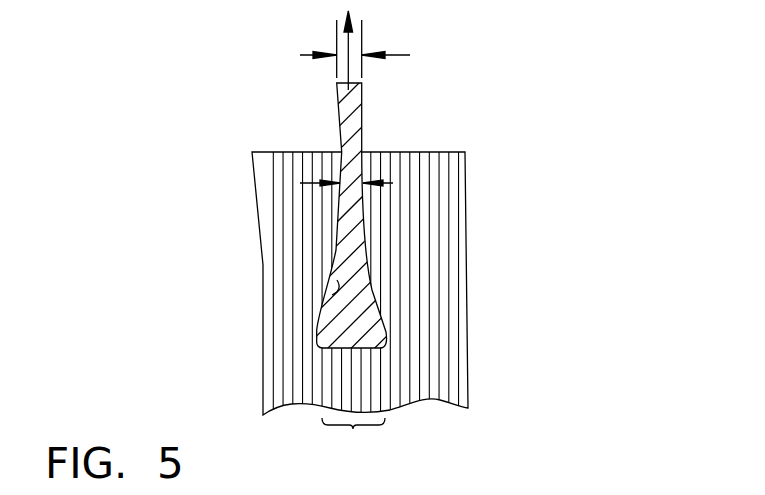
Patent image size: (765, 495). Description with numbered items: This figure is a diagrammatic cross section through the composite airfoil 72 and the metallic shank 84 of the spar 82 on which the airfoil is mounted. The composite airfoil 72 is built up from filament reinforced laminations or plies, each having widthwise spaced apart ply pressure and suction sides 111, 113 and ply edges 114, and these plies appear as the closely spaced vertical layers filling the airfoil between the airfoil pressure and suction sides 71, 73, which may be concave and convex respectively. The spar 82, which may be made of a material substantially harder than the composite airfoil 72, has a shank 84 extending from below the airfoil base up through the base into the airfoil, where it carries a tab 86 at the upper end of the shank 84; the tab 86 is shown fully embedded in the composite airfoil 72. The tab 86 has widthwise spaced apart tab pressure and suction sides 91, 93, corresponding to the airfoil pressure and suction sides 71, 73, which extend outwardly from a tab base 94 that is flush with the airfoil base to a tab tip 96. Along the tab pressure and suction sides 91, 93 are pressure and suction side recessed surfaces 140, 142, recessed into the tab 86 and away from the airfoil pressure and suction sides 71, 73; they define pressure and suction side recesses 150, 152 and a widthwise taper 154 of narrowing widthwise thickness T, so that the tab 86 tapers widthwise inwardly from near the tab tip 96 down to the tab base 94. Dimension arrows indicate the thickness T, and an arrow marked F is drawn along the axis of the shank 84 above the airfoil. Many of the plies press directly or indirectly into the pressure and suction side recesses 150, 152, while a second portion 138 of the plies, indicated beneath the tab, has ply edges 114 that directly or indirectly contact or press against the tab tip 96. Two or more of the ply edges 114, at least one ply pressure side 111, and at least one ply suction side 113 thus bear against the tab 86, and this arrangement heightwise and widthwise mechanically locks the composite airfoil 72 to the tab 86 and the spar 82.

The airfoil pressure side 71 is at (263, 341).
The composite airfoil 72 is at (468, 375).
The airfoil suction side 73 is at (467, 345).
The spar 82 is at (362, 105).
The shank 84 is at (341, 112).
The tab 86 is at (339, 202).
The tab pressure side 91 is at (337, 232).
The tab suction side 93 is at (366, 246).
The tab base 94 is at (350, 150).
The tab tip 96 is at (362, 348).
The ply pressure side 111 is at (440, 173).
The ply suction side 113 is at (440, 197).
The ply edges 114 is at (445, 152).
The second portion of the plies 138 is at (362, 434).
The pressure side recessed surface 140 is at (331, 265).
The suction side recessed surface 142 is at (370, 278).
The pressure side recess 150 is at (327, 287).
The suction side recess 152 is at (370, 288).
The widthwise taper 154 is at (300, 183).
The widthwise thickness T is at (307, 53).
The pull force F is at (360, 48).